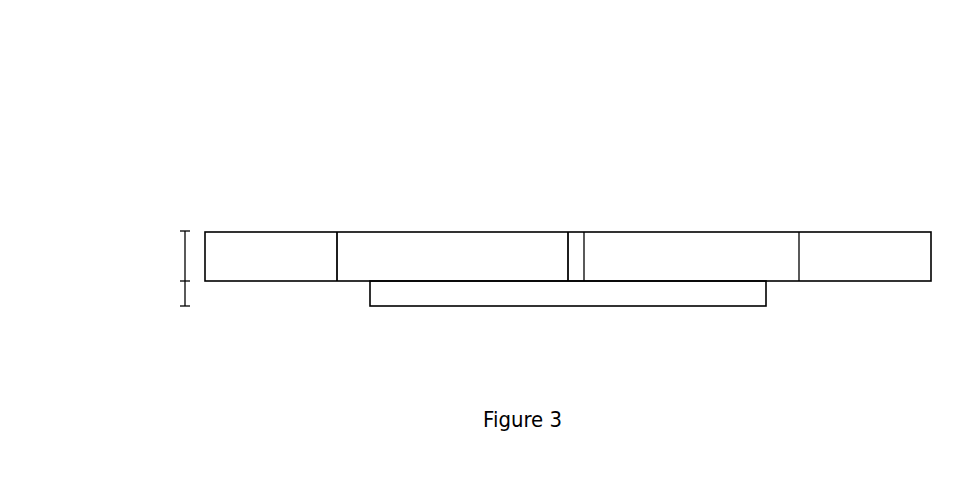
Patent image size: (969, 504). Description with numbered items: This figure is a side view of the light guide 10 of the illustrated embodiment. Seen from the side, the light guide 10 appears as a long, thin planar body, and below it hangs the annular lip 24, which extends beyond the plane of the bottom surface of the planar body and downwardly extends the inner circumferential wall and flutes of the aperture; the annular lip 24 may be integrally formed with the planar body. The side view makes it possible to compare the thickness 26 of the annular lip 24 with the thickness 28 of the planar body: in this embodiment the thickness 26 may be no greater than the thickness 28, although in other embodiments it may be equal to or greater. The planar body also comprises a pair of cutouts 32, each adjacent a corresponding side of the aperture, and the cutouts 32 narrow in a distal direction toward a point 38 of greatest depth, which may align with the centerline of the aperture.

The light guide 10 is at (353, 133).
The annular lip 24 is at (368, 288).
The thickness of annular lip 26 is at (183, 294).
The thickness of planar body 28 is at (183, 250).
The cutout 32 is at (462, 224).
The point of greatest depth of cutouts 38 is at (575, 231).